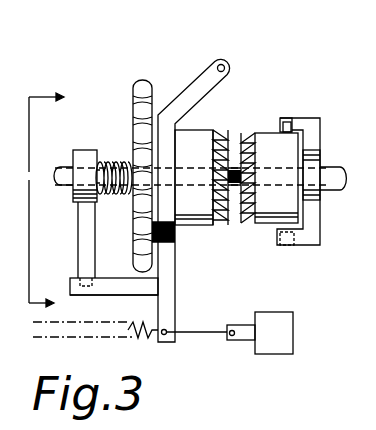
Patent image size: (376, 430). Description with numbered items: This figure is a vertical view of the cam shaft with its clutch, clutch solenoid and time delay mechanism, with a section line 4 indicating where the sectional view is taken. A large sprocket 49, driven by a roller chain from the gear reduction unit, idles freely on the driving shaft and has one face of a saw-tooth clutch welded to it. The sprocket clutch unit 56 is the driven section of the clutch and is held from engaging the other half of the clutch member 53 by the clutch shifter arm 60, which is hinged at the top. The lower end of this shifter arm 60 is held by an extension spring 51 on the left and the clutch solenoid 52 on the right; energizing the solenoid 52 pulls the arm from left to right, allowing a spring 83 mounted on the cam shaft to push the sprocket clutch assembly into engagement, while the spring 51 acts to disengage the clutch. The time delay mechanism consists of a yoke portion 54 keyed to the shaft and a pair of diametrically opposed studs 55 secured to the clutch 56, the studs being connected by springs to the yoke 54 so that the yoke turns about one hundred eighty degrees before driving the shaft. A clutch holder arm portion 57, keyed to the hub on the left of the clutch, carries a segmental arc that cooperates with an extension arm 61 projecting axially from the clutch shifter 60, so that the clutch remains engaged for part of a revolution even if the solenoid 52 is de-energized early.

The section line 4- 4 is at (54, 204).
The large sprocket 49 is at (145, 80).
The spring 51 is at (143, 340).
The solenoid 52 is at (293, 346).
The clutch member 53 is at (190, 226).
The yoke portion 54 is at (318, 120).
The studs 55 is at (285, 118).
The sprocket clutch unit 56 is at (248, 225).
The clutch holder arm portion 57 is at (97, 240).
The clutch shifter arm 60 is at (176, 298).
The extension arm 61 is at (113, 283).
The spring 83 is at (120, 160).